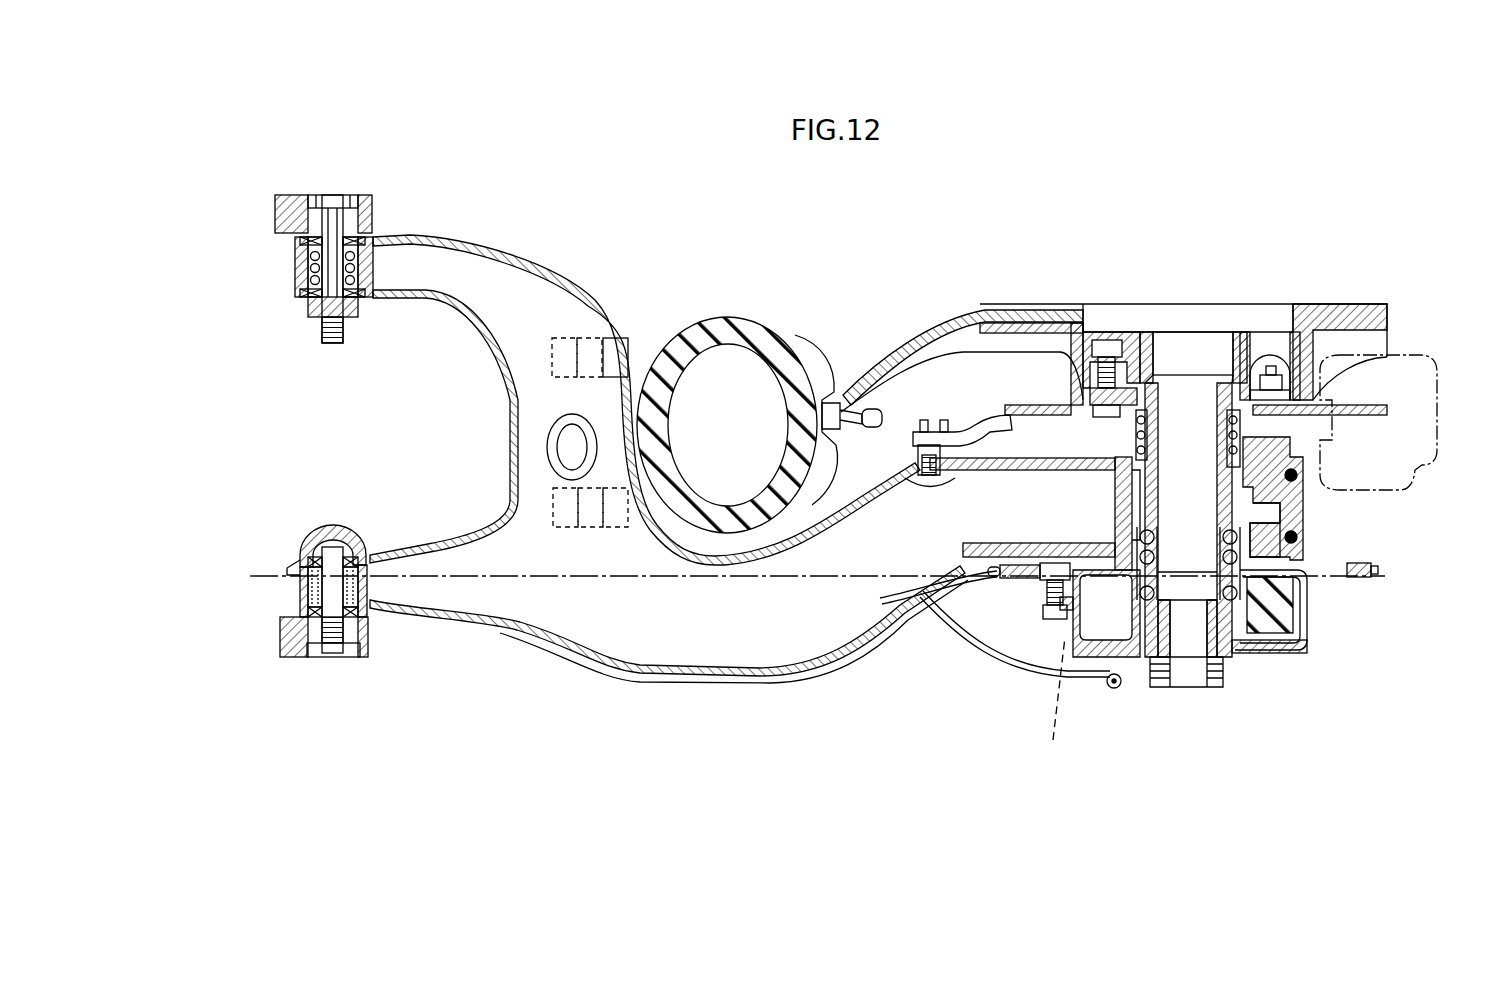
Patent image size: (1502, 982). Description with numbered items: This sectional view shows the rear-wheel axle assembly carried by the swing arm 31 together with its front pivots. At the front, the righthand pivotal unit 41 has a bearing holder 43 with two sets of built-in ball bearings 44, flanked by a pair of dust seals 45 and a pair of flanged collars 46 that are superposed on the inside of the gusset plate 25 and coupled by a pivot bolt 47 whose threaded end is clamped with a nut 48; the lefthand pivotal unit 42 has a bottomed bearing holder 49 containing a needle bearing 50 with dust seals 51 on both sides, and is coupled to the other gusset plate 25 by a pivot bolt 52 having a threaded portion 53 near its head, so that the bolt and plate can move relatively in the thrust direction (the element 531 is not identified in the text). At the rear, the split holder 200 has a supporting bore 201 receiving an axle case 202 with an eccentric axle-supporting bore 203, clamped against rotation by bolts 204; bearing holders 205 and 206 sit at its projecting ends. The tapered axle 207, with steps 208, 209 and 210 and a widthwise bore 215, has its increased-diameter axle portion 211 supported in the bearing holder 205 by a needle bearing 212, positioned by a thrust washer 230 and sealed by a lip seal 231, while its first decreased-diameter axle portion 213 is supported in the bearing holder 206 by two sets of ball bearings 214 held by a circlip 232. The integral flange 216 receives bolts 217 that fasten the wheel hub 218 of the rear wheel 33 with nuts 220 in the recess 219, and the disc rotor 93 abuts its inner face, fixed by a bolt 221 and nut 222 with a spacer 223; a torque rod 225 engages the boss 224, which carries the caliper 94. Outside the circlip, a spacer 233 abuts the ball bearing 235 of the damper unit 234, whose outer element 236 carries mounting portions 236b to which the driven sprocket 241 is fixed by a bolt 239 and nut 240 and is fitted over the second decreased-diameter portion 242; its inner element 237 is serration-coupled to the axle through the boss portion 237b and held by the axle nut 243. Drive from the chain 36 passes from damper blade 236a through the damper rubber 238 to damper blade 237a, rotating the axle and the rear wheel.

The gusset plate 25 is at (293, 207).
The swing arm 31 is at (572, 277).
The rear wheel 33 is at (893, 336).
The chain 36 is at (592, 576).
The righthand pivotal unit 41 is at (292, 294).
The lefthand pivotal unit 42 is at (294, 558).
The bearing holder 43 is at (298, 277).
The ball bearings 44 is at (360, 276).
The dust seals 45 is at (303, 243).
The flanged collars 46 is at (350, 205).
The pivot bolt 47 is at (333, 215).
The nut 48 is at (326, 330).
The bottomed bearing holder 49 is at (312, 537).
The needle bearing 50 is at (316, 591).
The dust seals 51 is at (368, 630).
The pivot bolt 52 is at (337, 656).
The threaded portion 53 is at (329, 635).
The seal 531 is at (316, 547).
The disc rotor 93 is at (1390, 407).
The caliper 94 is at (1428, 372).
The holder 200 is at (1306, 510).
The supporting bore 201 is at (1120, 502).
The axle case 202 is at (1118, 440).
The eccentric axle-supporting bore 203 is at (1130, 524).
The bolts 204 is at (1297, 475).
The bearing holder 205 is at (1241, 452).
The bearing holder 206 is at (1245, 548).
The axle 207 is at (1168, 696).
The step 208 is at (1160, 458).
The step 209 is at (1188, 563).
The step 210 is at (1187, 628).
The increased-diameter axle portion 211 is at (1120, 467).
The needle bearing 212 is at (1165, 460).
The first decreased-diameter axle portion 213 is at (1216, 560).
The ball bearings 214 is at (1137, 547).
The bore 215 is at (1160, 387).
The flange 216 is at (1090, 393).
The bolts 217 is at (1100, 410).
The wheel hub 218 is at (1077, 323).
The recess 219 is at (1127, 332).
The nut 220 is at (1105, 340).
The bolt 221 is at (1275, 415).
The nut 222 is at (1271, 366).
The spacer 223 is at (1262, 358).
The boss 224 is at (922, 462).
The torque rod 225 is at (970, 430).
The thrust washer 230 is at (1160, 430).
The lip seal 231 is at (1230, 385).
The circlip 232 is at (1092, 642).
The spacer 233 is at (1222, 667).
The damper unit 234 is at (1247, 667).
The ball bearing 235 is at (1295, 613).
The outer element 236 is at (1302, 640).
The damper blade 236a is at (1062, 703).
The mounting portions 236b is at (1057, 600).
The inner element 237 is at (1290, 653).
The damper blade 237a is at (1097, 620).
The boss portion 237b is at (1137, 625).
The damper rubber 238 is at (1270, 630).
The bolt 239 is at (1050, 565).
The nut 240 is at (1050, 623).
The driven sprocket 241 is at (1023, 583).
The second decreased-diameter portion 242 is at (1210, 625).
The axle nut 243 is at (1208, 670).